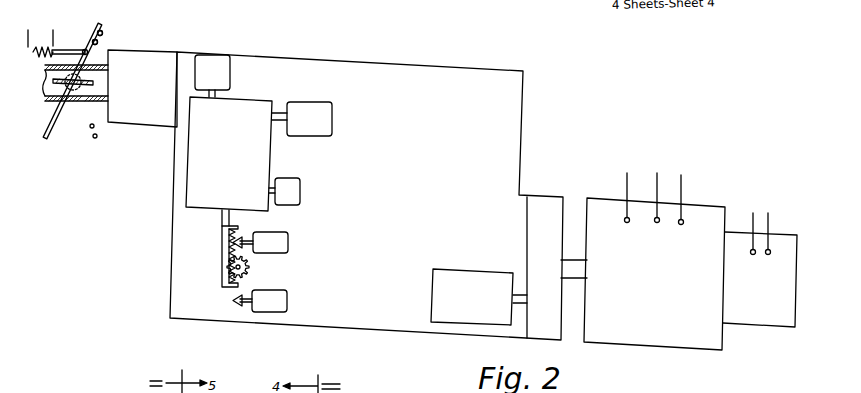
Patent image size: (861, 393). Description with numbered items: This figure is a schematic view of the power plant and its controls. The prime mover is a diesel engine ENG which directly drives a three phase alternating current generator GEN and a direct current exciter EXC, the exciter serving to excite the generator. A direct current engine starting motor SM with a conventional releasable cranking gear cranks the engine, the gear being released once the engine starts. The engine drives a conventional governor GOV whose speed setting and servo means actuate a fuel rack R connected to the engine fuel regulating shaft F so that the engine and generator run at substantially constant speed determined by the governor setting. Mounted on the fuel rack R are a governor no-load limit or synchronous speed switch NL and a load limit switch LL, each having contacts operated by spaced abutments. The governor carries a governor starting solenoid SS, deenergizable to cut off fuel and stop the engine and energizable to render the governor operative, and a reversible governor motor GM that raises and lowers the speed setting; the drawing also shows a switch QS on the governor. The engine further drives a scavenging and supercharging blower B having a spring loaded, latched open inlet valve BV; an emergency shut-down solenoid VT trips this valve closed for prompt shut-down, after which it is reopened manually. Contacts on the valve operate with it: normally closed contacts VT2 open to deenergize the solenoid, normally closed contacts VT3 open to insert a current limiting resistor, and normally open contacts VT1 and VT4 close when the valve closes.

The diesel engine ENG is at (508, 144).
The scavenging and supercharging blower B is at (158, 67).
The inlet valve BV is at (75, 100).
The emergency engine shut-down solenoid VT is at (44, 46).
The normally open contacts VT1 is at (90, 127).
The normally closed contacts VT2 is at (103, 31).
The normally closed contacts VT3 is at (98, 42).
The normally open contacts VT4 is at (95, 138).
The governor GOV is at (205, 168).
The governor starting solenoid SS is at (215, 74).
The reversible governor motor GM is at (299, 108).
The quick stop unit QS is at (290, 192).
The fuel rack R is at (222, 253).
The engine fuel regulating shaft F is at (248, 265).
The governor no-load limit or synchronous speed switch NL is at (273, 247).
The load limit switch LL is at (272, 300).
The direct current engine starting motor SM is at (457, 295).
The three phase alternating current generator GEN is at (665, 328).
The direct current exciter EXC is at (772, 310).